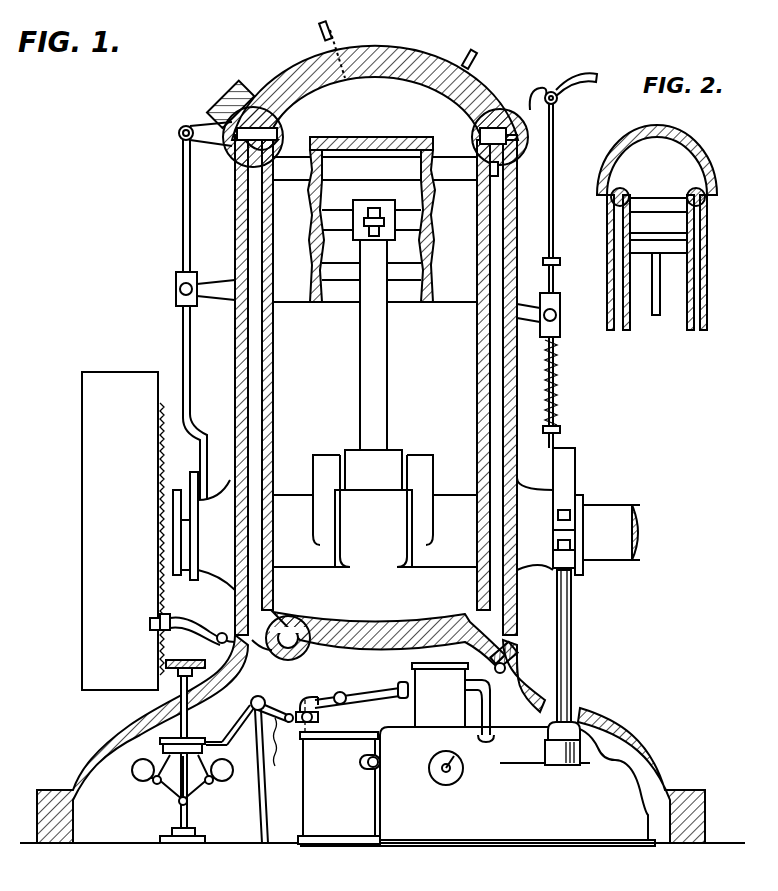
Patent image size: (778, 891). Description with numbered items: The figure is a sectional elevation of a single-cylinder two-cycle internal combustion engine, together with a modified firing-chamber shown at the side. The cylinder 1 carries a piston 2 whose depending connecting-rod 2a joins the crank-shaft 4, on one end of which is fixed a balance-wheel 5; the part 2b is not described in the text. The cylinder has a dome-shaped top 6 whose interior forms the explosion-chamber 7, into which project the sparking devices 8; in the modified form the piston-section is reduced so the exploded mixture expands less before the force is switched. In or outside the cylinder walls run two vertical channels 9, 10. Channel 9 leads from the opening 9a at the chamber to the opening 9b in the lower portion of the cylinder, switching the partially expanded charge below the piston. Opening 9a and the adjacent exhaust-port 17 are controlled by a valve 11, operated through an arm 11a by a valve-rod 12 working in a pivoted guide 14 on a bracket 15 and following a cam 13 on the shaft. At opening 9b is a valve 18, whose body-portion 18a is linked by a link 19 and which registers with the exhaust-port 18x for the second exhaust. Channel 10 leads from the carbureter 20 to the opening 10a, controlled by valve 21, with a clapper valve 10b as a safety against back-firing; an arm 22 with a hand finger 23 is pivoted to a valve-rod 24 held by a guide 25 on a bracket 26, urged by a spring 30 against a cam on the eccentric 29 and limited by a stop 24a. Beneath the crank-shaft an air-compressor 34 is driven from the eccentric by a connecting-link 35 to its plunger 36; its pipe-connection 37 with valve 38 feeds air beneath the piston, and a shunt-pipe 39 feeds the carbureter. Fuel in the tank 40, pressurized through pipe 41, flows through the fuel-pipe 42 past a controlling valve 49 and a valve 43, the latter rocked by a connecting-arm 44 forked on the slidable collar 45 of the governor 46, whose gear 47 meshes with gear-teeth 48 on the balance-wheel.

In FIG. 1, the cylinder 1 is at (517, 400).
In FIG. 2, the cylinder 1 is at (708, 278).
In FIG. 1, the piston 2 is at (375, 137).
In FIG. 2, the piston 2 is at (658, 225).
In FIG. 1, the connecting-rod 2a is at (387, 380).
In FIG. 2, the connecting-rod 2a is at (656, 315).
In FIG. 1, the piston rod nut 2b is at (378, 200).
In FIG. 1, the crank-shaft 4 is at (448, 500).
In FIG. 1, the balance-wheel 5 is at (103, 378).
In FIG. 1, the dome-shaped top 6 is at (425, 55).
In FIG. 1, the explosion-chamber 7 is at (364, 97).
In FIG. 2, the explosion-chamber 7 is at (658, 169).
In FIG. 1, the sparking device 8 is at (322, 30).
In FIG. 1, the channel 9 is at (248, 208).
In FIG. 1, the opening 9a is at (283, 126).
In FIG. 1, the opening 9b is at (300, 612).
In FIG. 1, the channel 10 is at (492, 226).
In FIG. 2, the channel 10 is at (694, 310).
In FIG. 1, the opening 10a is at (474, 124).
In FIG. 1, the clapper valve 10b is at (500, 172).
In FIG. 1, the valve 11 is at (252, 108).
In FIG. 1, the arm 11a is at (205, 120).
In FIG. 1, the valve-rod 12 is at (183, 220).
In FIG. 1, the cam 13 is at (198, 528).
In FIG. 1, the pivoted guide 14 is at (176, 285).
In FIG. 1, the bracket 15 is at (218, 302).
In FIG. 1, the exhaust-port 17 is at (225, 100).
In FIG. 1, the valve 18 is at (290, 660).
In FIG. 1, the body-portion 18a is at (228, 648).
In FIG. 1, the exhaust-port 18x is at (262, 652).
In FIG. 1, the link 19 is at (188, 628).
In FIG. 1, the carbureter 20 is at (440, 695).
In FIG. 1, the valve 21 is at (450, 136).
In FIG. 1, the arm 22 is at (538, 88).
In FIG. 1, the finger 23 is at (580, 78).
In FIG. 1, the valve-rod 24 is at (554, 241).
In FIG. 1, the limit-stop 24a is at (560, 262).
In FIG. 1, the guide 25 is at (560, 308).
In FIG. 1, the bracket 26 is at (560, 330).
In FIG. 1, the eccentric 29 is at (580, 500).
In FIG. 1, the spring 30 is at (560, 360).
In FIG. 1, the air-compressor 34 is at (477, 786).
In FIG. 1, the connecting-link 35 is at (571, 660).
In FIG. 1, the plunger 36 is at (564, 758).
In FIG. 1, the pipe-connection 37 is at (488, 722).
In FIG. 1, the valve 38 is at (512, 662).
In FIG. 1, the shunt-pipe 39 is at (490, 698).
In FIG. 1, the tank 40 is at (339, 788).
In FIG. 1, the pipe 41 is at (370, 768).
In FIG. 1, the fuel-pipe 42 is at (345, 698).
In FIG. 1, the valve 43 is at (319, 712).
In FIG. 1, the connecting-arm 44 is at (250, 708).
In FIG. 1, the slidable collar 45 is at (160, 742).
In FIG. 1, the governor 46 is at (150, 780).
In FIG. 1, the gear 47 is at (158, 675).
In FIG. 1, the gear-teeth 48 is at (160, 598).
In FIG. 1, the controlling valve 49 is at (371, 704).